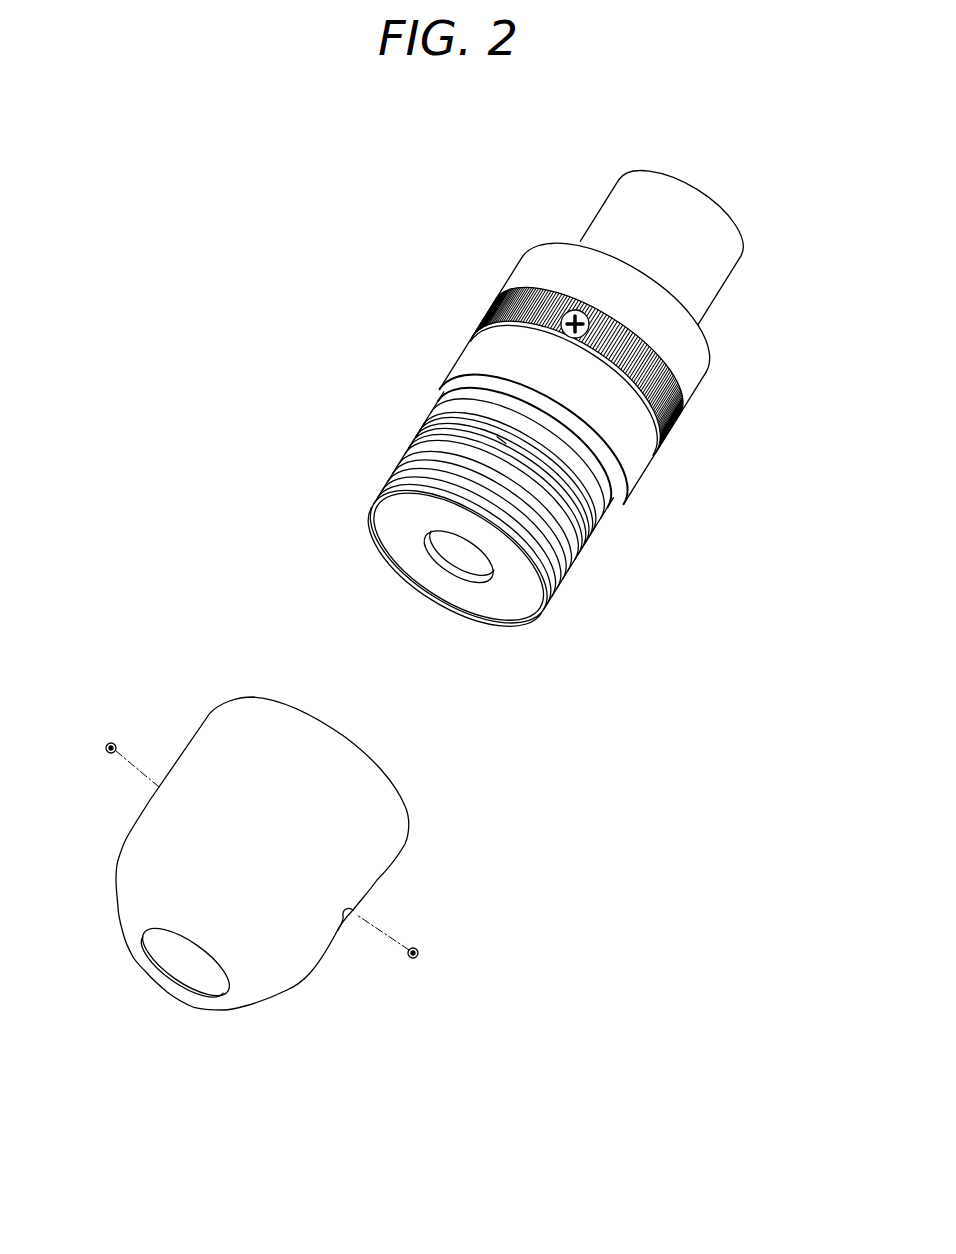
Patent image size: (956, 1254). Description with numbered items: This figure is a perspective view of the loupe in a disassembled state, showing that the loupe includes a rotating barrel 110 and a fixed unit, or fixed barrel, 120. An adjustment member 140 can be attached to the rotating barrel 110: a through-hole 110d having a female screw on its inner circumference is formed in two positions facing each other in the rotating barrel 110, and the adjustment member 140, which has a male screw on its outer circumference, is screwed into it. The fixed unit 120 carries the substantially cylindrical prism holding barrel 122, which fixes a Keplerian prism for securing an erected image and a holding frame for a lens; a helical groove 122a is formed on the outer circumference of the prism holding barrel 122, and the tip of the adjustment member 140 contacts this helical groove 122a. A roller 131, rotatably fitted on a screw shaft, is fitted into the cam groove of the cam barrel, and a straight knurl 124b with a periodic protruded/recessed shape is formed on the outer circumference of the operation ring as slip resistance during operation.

The rotating barrel 110 is at (260, 835).
The through-hole 110d is at (349, 918).
The fixed unit (fixed barrel) 120 is at (579, 436).
The prism holding barrel 122 is at (560, 551).
The helical groove 122a is at (577, 560).
The straight knurl 124b is at (684, 410).
The roller 131 is at (575, 308).
The adjustment member 140 is at (110, 742).